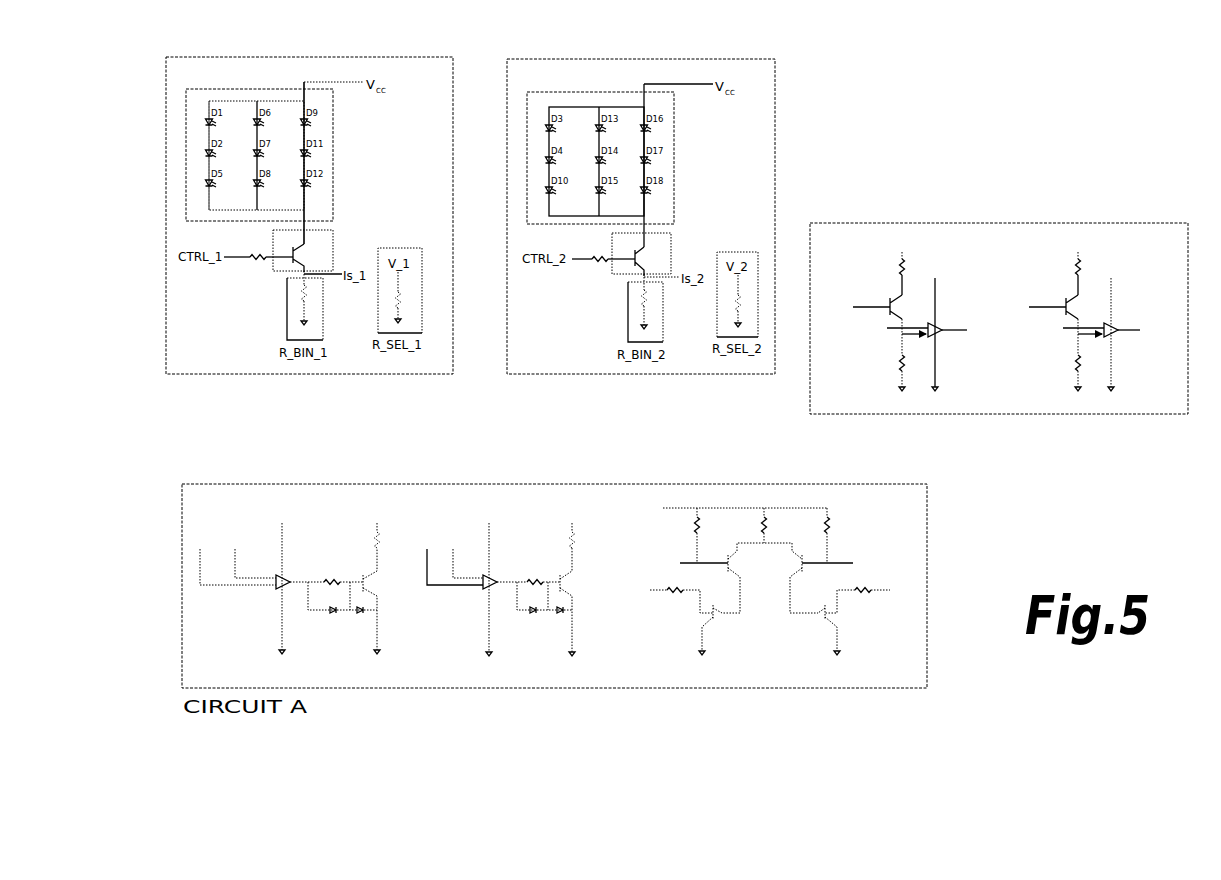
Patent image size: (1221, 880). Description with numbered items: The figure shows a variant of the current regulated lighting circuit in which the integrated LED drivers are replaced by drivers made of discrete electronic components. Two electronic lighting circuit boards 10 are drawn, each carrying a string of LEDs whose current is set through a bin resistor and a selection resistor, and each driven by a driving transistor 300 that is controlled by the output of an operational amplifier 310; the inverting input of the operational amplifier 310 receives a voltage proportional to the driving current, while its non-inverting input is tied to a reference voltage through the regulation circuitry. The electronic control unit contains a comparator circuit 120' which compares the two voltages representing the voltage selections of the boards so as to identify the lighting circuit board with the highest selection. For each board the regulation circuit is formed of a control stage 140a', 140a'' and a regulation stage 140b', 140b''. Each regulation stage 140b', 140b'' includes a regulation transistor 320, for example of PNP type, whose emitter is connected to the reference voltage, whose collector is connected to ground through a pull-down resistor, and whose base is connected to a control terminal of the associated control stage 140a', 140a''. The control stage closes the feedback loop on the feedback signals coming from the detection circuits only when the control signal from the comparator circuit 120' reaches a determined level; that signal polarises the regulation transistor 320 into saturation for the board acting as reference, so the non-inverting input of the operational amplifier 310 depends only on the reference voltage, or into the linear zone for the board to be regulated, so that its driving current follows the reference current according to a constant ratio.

The electronic lighting circuit board 10 is at (540, 58).
The driving transistor 300 is at (337, 237).
The operational amplifier 310 is at (943, 316).
The regulation transistor 320 is at (888, 288).
The control stage 140a' is at (296, 534).
The control stage 140a'' is at (508, 542).
The regulation stage 140b' is at (931, 353).
The regulation stage 140b'' is at (1094, 370).
The comparator circuit 120' is at (762, 609).